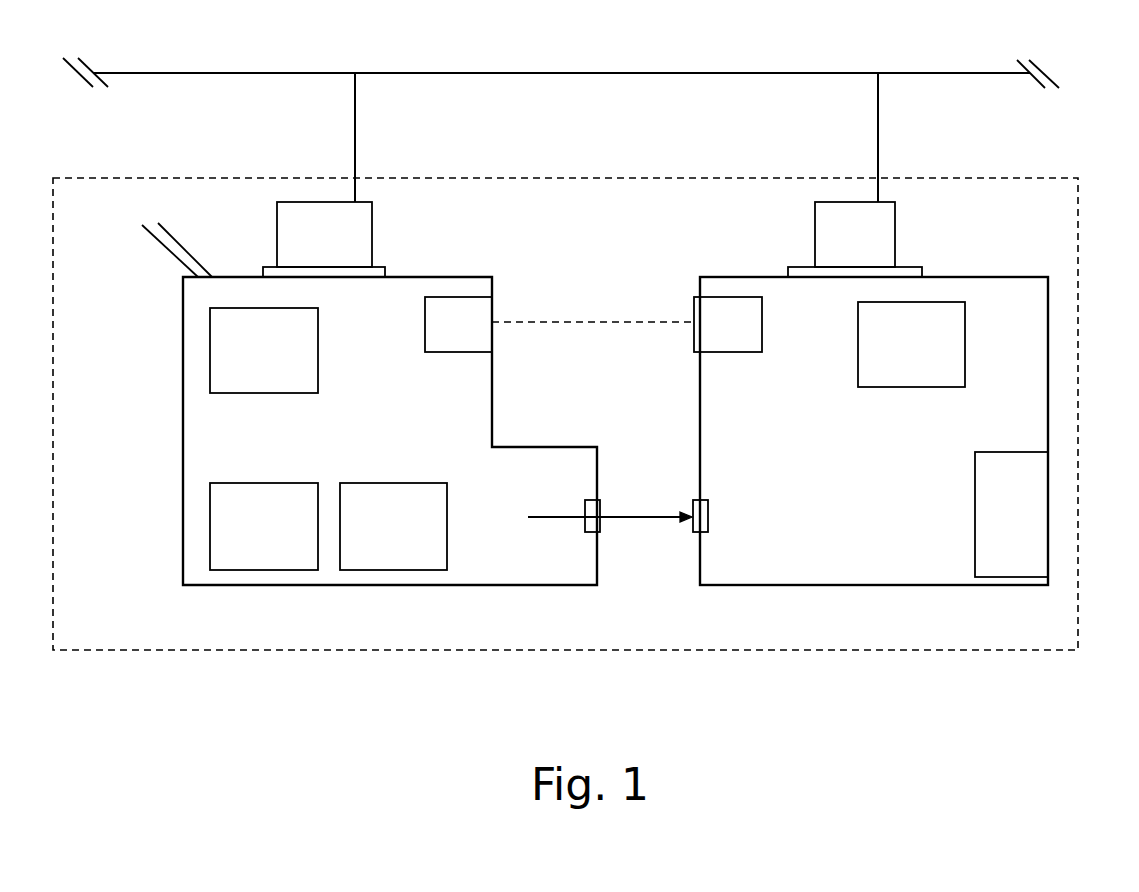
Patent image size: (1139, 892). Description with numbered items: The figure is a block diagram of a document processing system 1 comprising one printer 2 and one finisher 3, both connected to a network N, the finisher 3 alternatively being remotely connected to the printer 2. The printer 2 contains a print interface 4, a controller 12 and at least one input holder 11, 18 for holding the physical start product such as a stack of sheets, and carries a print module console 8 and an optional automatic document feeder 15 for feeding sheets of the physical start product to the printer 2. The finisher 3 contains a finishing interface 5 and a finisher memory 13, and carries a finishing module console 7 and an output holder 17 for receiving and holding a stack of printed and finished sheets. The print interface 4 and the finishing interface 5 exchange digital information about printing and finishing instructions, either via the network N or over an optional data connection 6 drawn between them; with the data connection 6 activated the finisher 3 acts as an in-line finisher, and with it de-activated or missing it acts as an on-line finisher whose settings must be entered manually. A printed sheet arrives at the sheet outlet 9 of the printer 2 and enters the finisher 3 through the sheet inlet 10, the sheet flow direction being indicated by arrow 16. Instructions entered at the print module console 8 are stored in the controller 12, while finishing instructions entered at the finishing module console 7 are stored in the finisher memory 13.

The network N is at (933, 73).
The document processing system 1 is at (512, 650).
The printer 2 is at (275, 587).
The finisher 3 is at (848, 587).
The print interface 4 is at (422, 323).
The finishing interface 5 is at (762, 318).
The data connection 6 is at (573, 320).
The finishing module console 7 is at (895, 213).
The print module console 8 is at (305, 237).
The sheet outlet 9 is at (587, 518).
The sheet inlet 10 is at (702, 510).
The input holder 11 is at (280, 483).
The controller 12 is at (230, 393).
The finisher memory 13 is at (878, 387).
The automatic document feeder 15 is at (157, 228).
The arrow 16 is at (622, 515).
The output holder 17 is at (1038, 543).
The input holder 18 is at (410, 483).